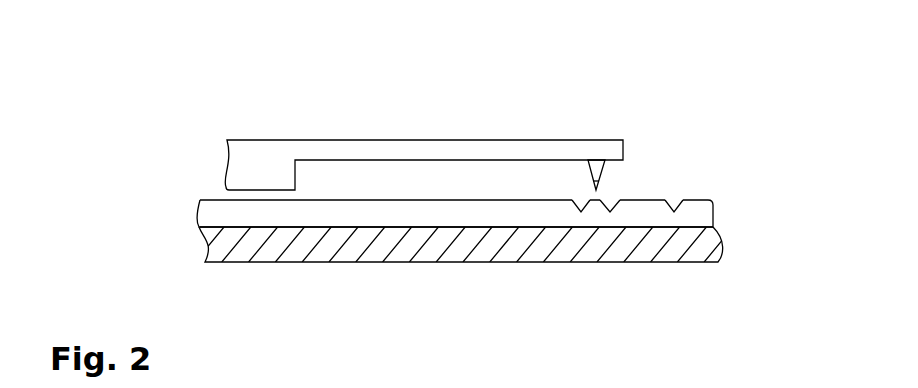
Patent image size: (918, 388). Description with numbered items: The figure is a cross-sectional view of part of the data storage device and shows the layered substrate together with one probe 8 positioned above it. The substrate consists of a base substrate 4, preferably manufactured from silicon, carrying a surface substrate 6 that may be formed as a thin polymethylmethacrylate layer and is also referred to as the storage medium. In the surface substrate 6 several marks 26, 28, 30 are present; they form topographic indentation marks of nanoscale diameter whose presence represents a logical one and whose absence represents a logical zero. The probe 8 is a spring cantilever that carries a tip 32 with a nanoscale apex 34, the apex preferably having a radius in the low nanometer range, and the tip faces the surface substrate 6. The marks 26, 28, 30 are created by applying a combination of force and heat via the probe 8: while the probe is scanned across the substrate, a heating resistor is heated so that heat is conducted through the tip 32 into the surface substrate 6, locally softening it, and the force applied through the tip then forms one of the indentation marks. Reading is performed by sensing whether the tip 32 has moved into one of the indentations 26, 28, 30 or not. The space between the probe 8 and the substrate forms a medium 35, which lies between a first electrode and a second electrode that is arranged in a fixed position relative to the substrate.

The base substrate 4 is at (216, 246).
The surface substrate 6 is at (216, 218).
The probe 8 is at (382, 121).
The mark 26 is at (577, 199).
The mark 28 is at (616, 199).
The mark 30 is at (677, 207).
The tip 32 is at (598, 172).
The nanoscale apex 34 is at (597, 190).
The medium 35 is at (510, 170).